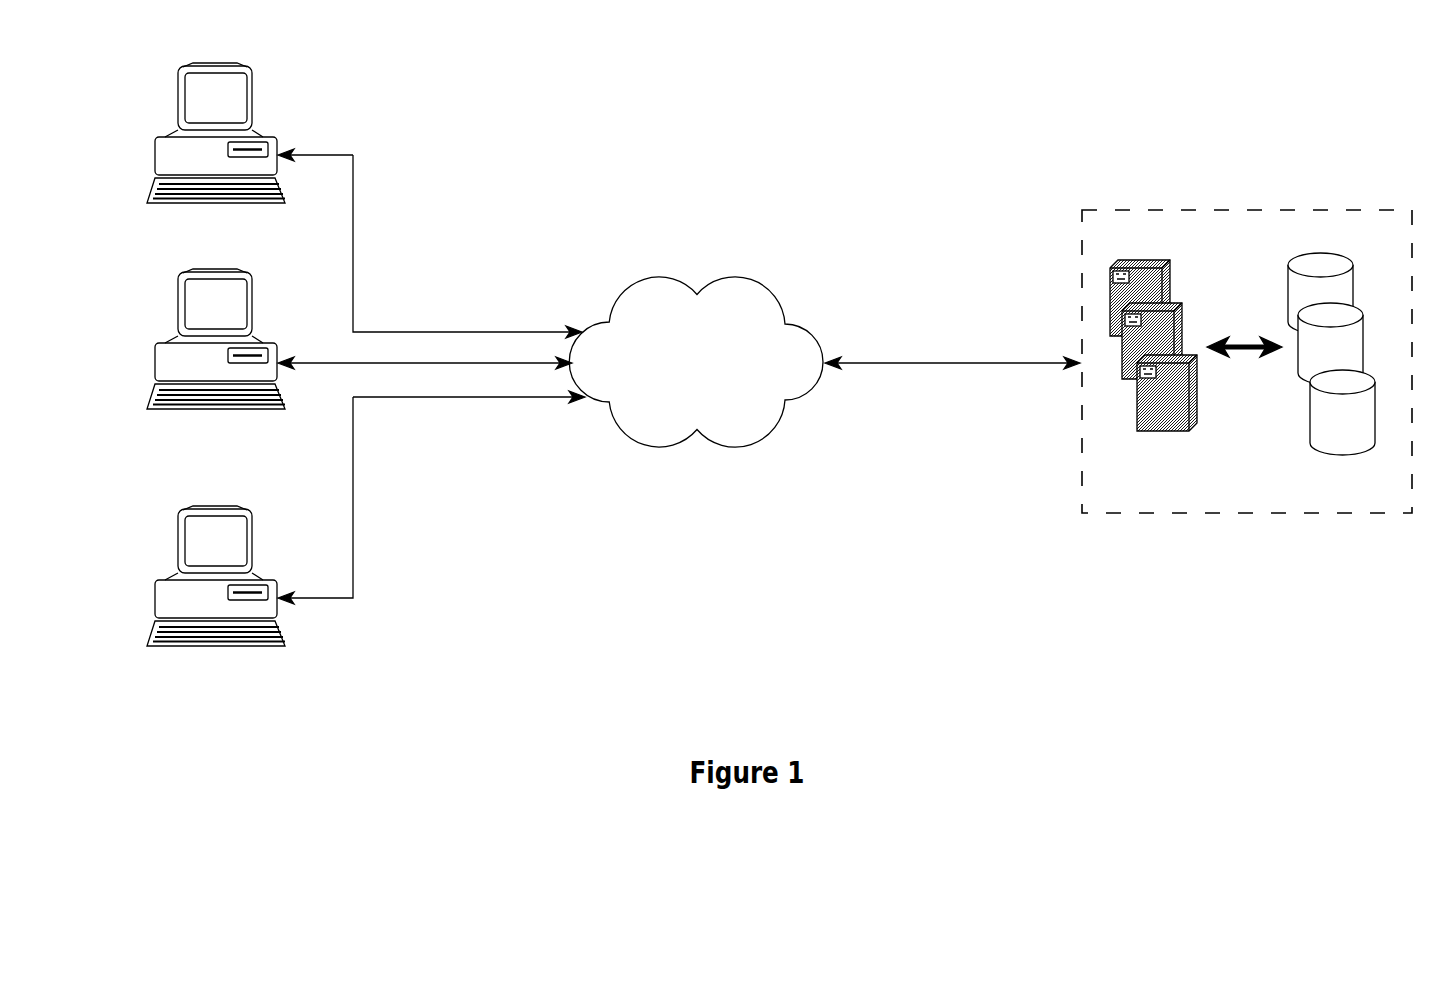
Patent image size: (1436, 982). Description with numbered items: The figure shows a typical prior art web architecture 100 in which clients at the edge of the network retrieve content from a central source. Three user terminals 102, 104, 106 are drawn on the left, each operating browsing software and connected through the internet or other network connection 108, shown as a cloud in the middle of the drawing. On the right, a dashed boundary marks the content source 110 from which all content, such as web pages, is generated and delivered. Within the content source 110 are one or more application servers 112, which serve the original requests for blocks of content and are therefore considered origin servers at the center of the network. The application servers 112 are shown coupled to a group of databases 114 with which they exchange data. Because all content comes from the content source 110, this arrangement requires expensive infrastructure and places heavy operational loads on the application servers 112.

The web architecture 100 is at (788, 88).
The user terminal 102 is at (253, 100).
The user terminal 104 is at (253, 308).
The user terminal 106 is at (253, 542).
The internet or other network connection 108 is at (755, 278).
The content source 110 is at (1246, 210).
The application servers 112 is at (1110, 300).
The databases 114 is at (1288, 298).